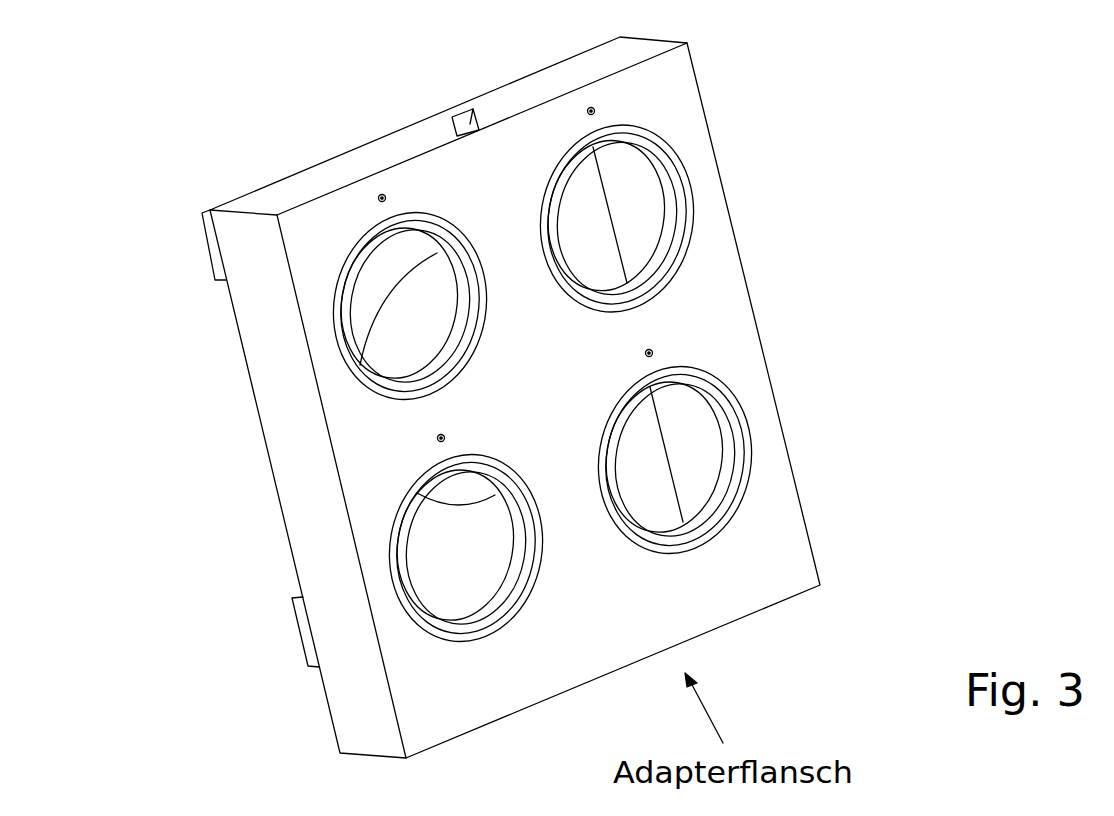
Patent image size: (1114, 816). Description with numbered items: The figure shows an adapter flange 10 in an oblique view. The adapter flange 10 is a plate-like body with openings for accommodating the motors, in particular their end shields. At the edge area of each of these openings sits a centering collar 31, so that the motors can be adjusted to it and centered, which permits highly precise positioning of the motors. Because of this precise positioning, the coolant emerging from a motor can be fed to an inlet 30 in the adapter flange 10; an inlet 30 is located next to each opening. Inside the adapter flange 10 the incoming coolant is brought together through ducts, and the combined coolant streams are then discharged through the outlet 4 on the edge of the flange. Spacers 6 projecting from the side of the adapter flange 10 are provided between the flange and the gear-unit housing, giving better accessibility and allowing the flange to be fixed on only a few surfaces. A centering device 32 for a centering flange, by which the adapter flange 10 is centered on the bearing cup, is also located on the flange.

The adapter flange 10 is at (747, 580).
The outlet 4 is at (470, 124).
The spacers 6 is at (215, 245).
The inlet 30 is at (380, 196).
The centering collar 31 is at (347, 353).
The centering device 32 is at (492, 494).